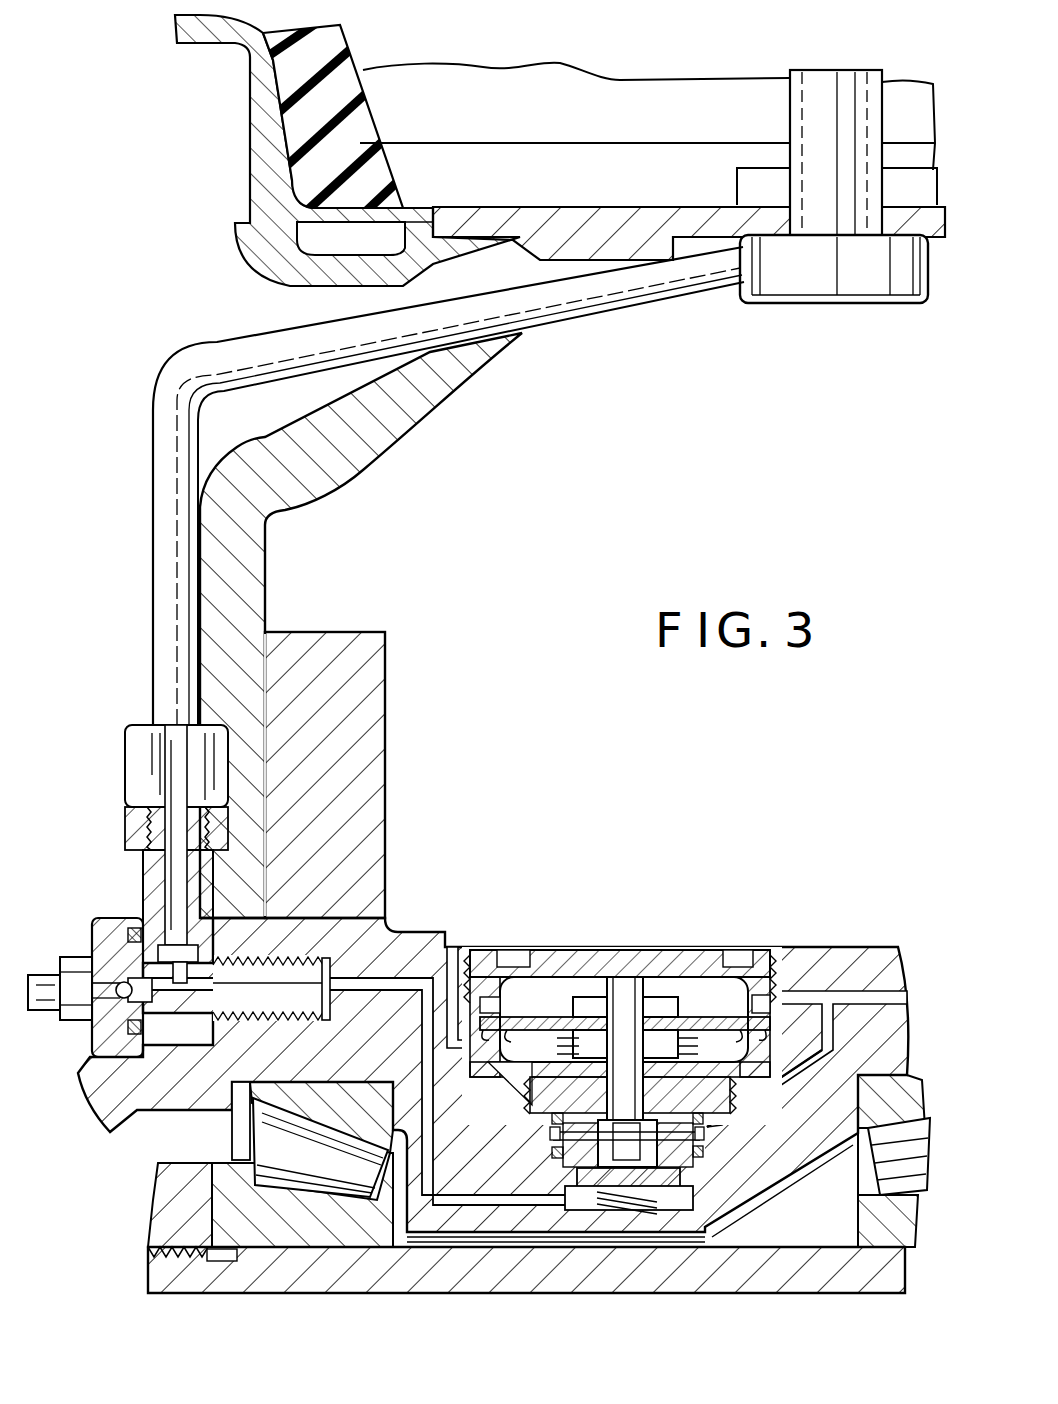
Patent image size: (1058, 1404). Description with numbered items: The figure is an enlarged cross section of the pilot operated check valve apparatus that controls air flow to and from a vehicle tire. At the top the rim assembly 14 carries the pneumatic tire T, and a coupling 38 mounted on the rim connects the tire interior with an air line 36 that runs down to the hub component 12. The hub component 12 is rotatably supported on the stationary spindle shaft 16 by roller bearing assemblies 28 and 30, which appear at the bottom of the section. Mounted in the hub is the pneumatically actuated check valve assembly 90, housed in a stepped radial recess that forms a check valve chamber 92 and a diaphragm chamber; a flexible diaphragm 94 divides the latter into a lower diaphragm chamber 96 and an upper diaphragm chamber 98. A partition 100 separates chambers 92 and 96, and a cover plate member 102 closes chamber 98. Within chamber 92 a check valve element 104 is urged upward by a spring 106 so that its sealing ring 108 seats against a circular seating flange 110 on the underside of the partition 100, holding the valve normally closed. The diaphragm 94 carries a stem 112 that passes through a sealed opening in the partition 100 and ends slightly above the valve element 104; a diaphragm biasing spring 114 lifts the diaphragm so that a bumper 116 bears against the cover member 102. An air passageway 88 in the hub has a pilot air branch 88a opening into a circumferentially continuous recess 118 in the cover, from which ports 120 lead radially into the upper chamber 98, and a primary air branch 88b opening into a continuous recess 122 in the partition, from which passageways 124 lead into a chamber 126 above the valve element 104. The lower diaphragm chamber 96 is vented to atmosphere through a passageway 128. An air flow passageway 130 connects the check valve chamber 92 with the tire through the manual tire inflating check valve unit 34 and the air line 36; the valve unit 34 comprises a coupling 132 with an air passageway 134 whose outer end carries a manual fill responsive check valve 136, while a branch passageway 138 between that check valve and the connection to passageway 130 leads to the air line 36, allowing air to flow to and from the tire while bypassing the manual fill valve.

The pneumatic tire T is at (345, 72).
The hub component 12 is at (862, 912).
The rim assembly 14 is at (355, 455).
The spindle shaft 16 is at (722, 1270).
The roller bearing assembly 28 is at (212, 1137).
The roller bearing assembly 30 is at (920, 1262).
The manual tire inflating check valve unit 34 is at (92, 917).
The air line 36 is at (216, 352).
The coupling 38 is at (877, 285).
The air passageway 88 is at (870, 1020).
The pilot air branch 88a is at (803, 1020).
The primary air branch 88b is at (773, 1100).
The pneumatically actuated check valve assembly 90 is at (636, 1086).
The check valve chamber 92 is at (629, 1256).
The flexible diaphragm 94 is at (554, 1009).
The lower diaphragm chamber 96 is at (699, 1009).
The upper diaphragm chamber 98 is at (548, 985).
The partition 100 is at (722, 1078).
The cover plate member 102 is at (588, 960).
The check valve element 104 is at (583, 1175).
The spring 106 is at (595, 1210).
The sealing ring 108 is at (556, 1258).
The circular seating flange 110 is at (655, 1092).
The stem 112 is at (595, 1092).
The diaphragm biasing spring 114 is at (550, 1052).
The bumper 116 is at (640, 982).
The circumferentially continuous recess 118 is at (765, 1010).
The ports 120 is at (485, 1000).
The circumferentially continuous recess 122 is at (678, 1136).
The passageways 124 is at (553, 1133).
The chamber 126 is at (596, 1150).
The passageway 128 is at (443, 930).
The air flow passageway 130 is at (425, 1020).
The coupling 132 is at (245, 1005).
The air passageway 134 is at (120, 1000).
The manual fill responsive check valve 136 is at (135, 985).
The branch passageway 138 is at (178, 890).